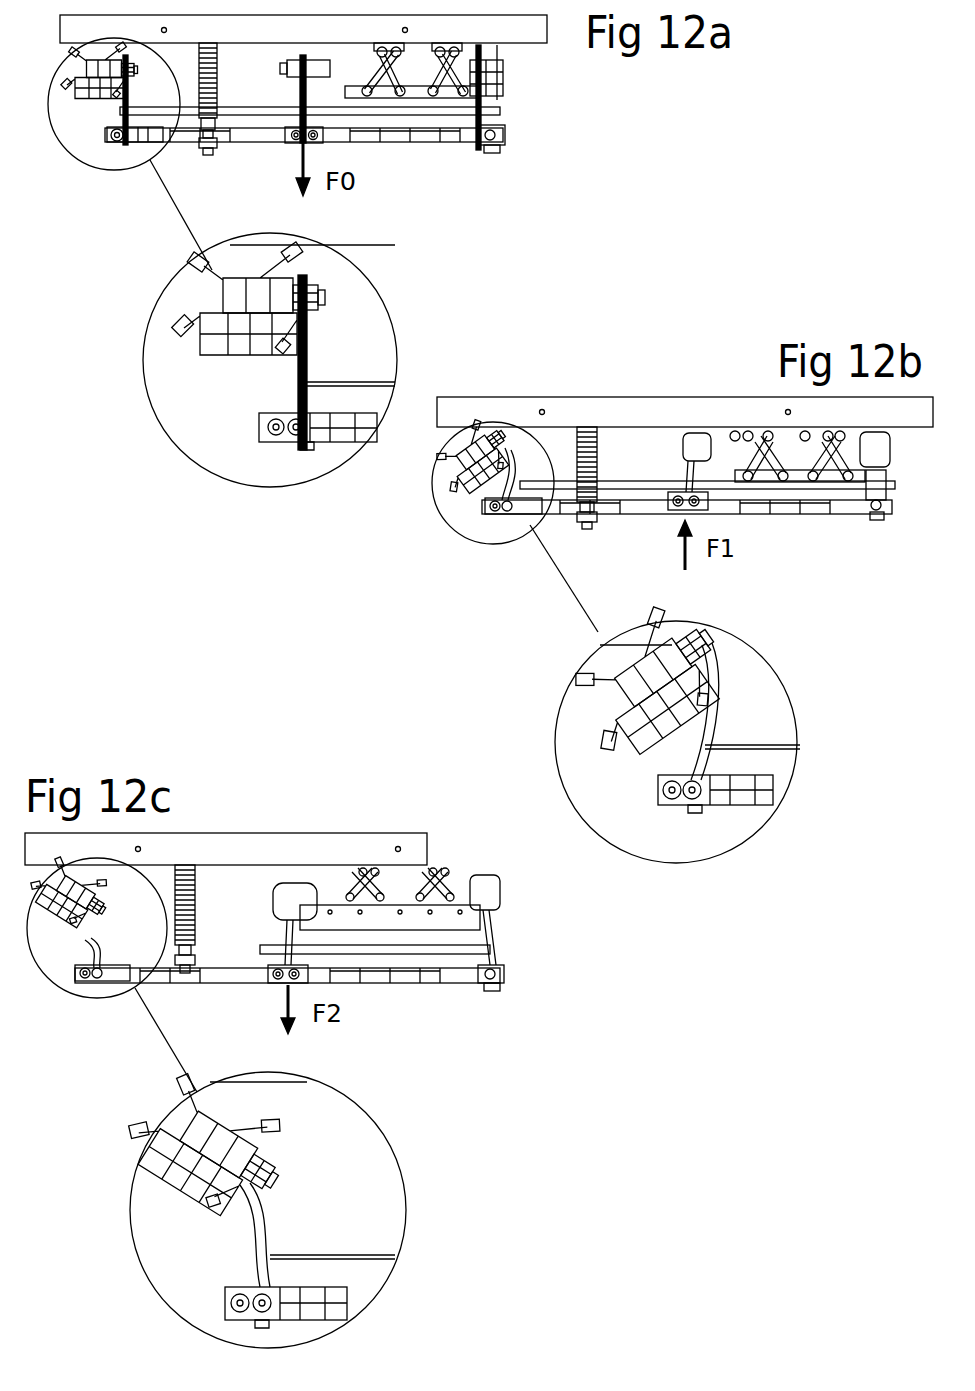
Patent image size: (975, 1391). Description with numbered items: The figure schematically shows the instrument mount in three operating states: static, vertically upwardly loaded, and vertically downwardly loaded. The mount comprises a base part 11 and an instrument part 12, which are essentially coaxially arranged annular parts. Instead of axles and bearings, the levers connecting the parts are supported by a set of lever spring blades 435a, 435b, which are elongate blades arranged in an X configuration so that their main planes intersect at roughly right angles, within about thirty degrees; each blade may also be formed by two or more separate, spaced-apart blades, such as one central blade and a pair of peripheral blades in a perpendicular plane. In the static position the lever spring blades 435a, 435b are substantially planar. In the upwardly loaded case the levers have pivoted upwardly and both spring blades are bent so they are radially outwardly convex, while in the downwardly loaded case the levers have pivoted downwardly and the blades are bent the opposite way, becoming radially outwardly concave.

In FIG. 12A, the base part 11 is at (512, 30).
In FIG. 12A, the instrument part 12 is at (450, 137).
In FIG. 12A, the lever spring blade 435a is at (222, 280).
In FIG. 12B, the lever spring blade 435a is at (622, 668).
In FIG. 12C, the lever spring blade 435a is at (207, 1102).
In FIG. 12A, the lever spring blade 435b is at (212, 323).
In FIG. 12B, the lever spring blade 435b is at (620, 712).
In FIG. 12C, the lever spring blade 435b is at (173, 1140).